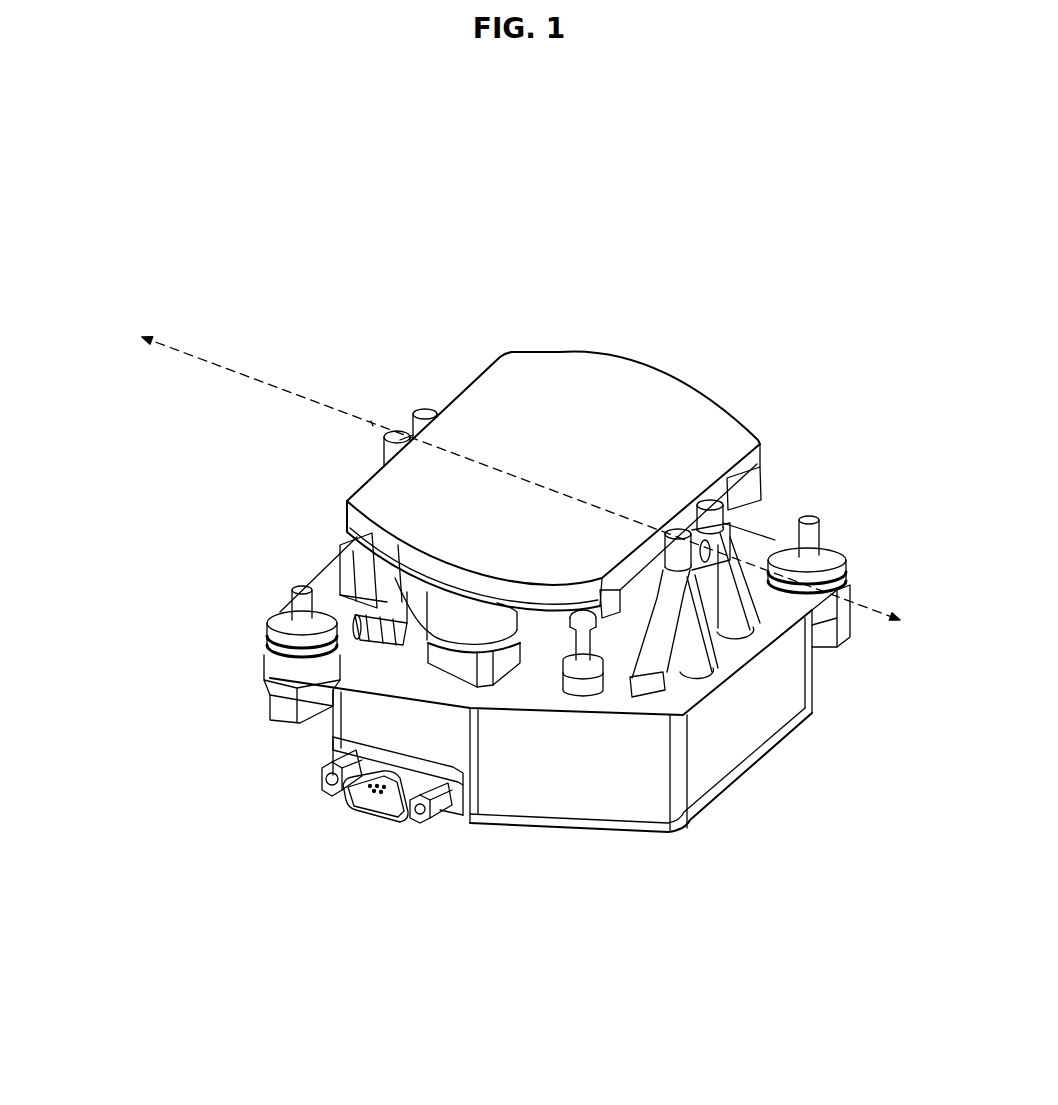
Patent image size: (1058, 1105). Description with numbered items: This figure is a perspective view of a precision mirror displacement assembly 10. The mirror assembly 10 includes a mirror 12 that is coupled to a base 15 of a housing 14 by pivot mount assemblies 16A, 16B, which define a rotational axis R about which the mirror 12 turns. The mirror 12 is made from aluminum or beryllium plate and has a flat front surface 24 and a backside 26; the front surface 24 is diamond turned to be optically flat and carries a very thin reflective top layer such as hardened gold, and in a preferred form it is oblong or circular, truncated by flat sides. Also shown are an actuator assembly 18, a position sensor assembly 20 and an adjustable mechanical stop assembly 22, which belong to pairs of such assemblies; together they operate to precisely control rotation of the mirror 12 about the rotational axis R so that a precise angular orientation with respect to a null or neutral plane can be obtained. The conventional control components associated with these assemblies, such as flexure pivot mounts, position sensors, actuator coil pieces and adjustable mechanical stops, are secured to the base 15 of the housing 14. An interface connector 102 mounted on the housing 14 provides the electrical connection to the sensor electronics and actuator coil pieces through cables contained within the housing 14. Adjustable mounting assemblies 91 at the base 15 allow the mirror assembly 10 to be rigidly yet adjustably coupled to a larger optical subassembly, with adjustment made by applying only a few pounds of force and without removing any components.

The precision mirror displacement assembly 10 is at (193, 293).
The mirror 12 is at (762, 460).
The housing 14 is at (498, 790).
The base 15 is at (647, 697).
The pivot mount assembly 16A is at (383, 440).
The pivot mount assembly 16B is at (715, 615).
The actuator assembly 18 is at (450, 630).
The position sensor assembly 20 is at (347, 588).
The adjustable mechanical stop assembly 22 is at (583, 640).
The front surface 24 is at (642, 387).
The backside 26 is at (347, 532).
The adjustable mounting assembly 91 is at (260, 638).
The interface connector 102 is at (345, 813).
The rotational axis R is at (371, 421).